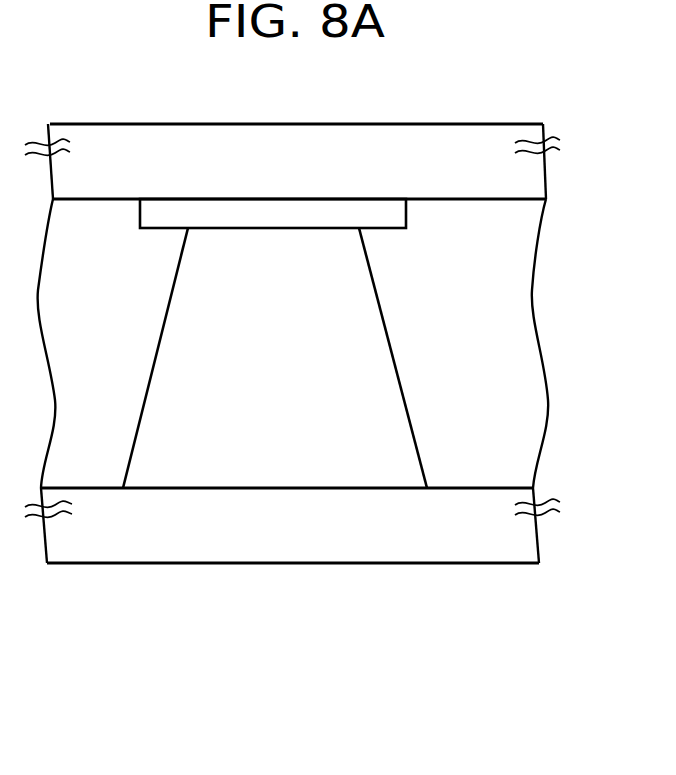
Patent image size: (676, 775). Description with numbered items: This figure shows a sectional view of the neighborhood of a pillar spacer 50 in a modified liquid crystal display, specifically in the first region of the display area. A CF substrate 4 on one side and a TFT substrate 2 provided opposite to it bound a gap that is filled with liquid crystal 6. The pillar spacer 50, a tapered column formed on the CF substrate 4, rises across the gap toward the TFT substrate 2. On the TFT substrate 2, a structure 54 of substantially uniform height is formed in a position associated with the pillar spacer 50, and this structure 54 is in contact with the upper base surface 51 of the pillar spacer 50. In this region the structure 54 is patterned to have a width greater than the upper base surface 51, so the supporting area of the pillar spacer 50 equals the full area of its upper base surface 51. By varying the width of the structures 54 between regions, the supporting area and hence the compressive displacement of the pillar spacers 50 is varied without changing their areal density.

The TFT substrate 2 is at (523, 170).
The CF substrate 4 is at (523, 537).
The liquid crystal 6 is at (523, 345).
The pillar spacer 50 is at (388, 392).
The upper base surface 51 is at (235, 228).
The structure 54 is at (390, 216).